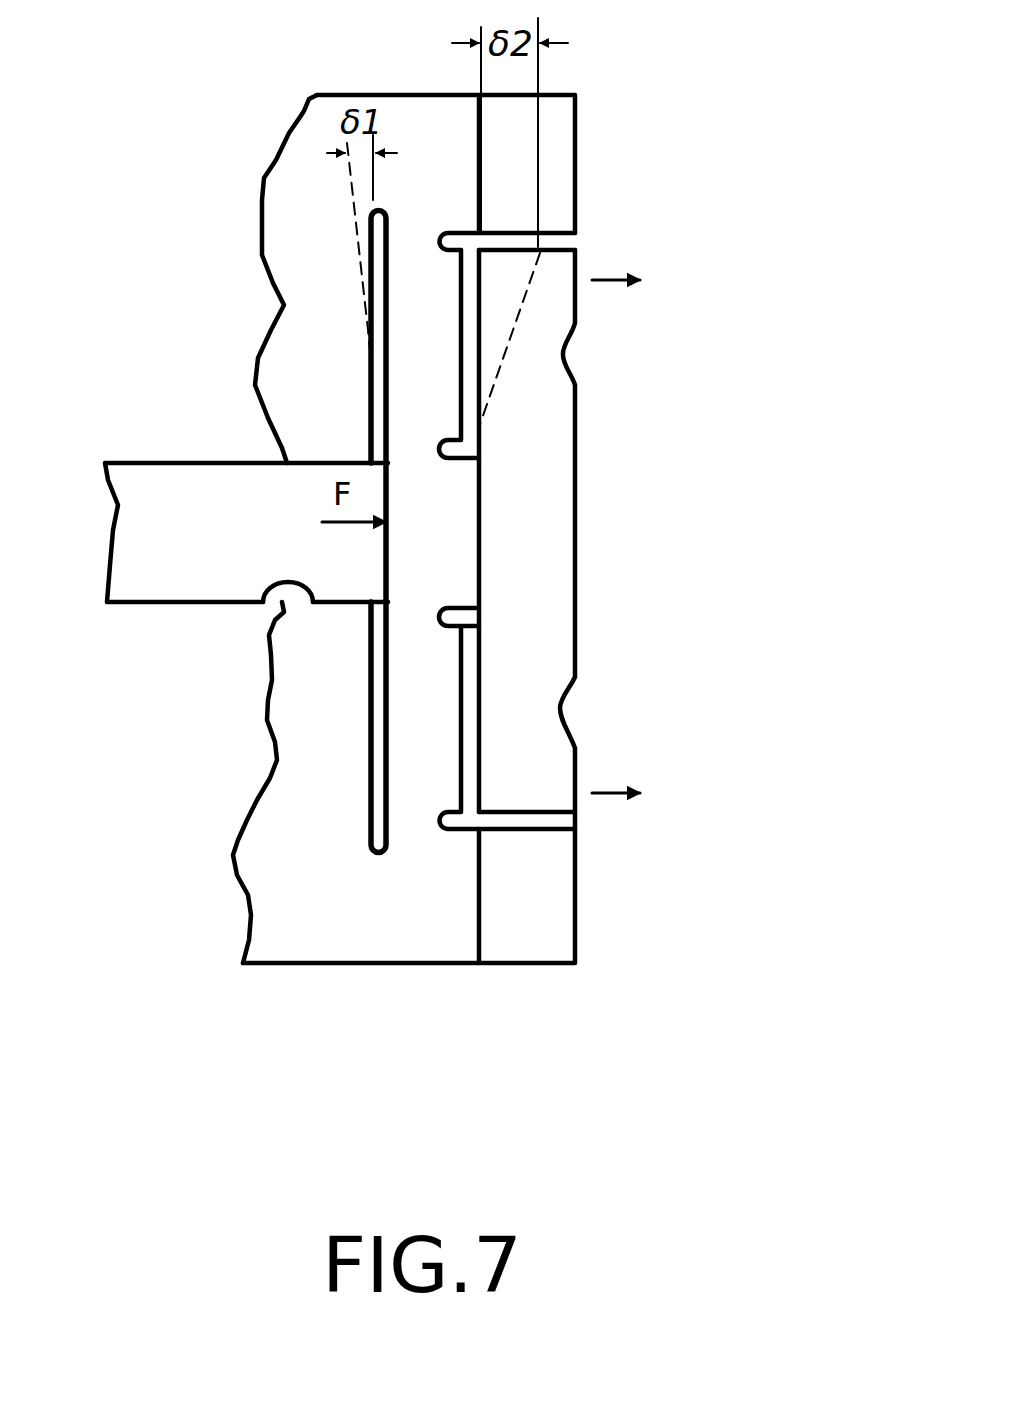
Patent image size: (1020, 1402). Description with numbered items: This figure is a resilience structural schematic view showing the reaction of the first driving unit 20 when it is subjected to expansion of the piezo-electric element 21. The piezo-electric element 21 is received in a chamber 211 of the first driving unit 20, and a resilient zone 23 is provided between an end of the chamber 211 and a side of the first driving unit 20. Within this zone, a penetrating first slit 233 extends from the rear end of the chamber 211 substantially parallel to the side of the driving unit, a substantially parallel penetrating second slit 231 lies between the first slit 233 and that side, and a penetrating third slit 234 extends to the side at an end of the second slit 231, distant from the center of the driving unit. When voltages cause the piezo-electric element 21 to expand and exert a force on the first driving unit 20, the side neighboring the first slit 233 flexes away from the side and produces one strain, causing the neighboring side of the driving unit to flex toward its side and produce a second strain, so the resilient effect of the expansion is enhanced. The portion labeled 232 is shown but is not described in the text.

The first driving unit 20 is at (275, 970).
The piezo-electric element 21 is at (152, 590).
The chamber 211 is at (262, 606).
The resilient zone 23 is at (582, 531).
The second slit 231 is at (470, 380).
The main body of elastic member 232 is at (565, 352).
The first slit 233 is at (372, 807).
The third slit 234 is at (562, 243).